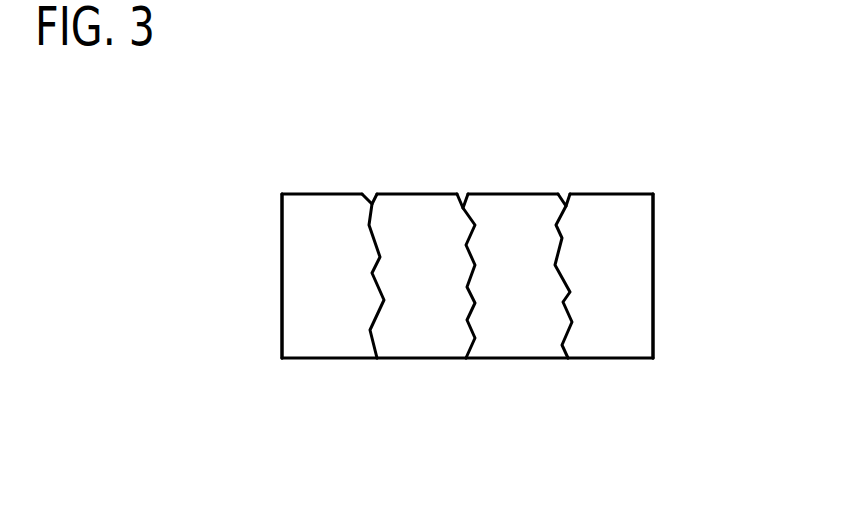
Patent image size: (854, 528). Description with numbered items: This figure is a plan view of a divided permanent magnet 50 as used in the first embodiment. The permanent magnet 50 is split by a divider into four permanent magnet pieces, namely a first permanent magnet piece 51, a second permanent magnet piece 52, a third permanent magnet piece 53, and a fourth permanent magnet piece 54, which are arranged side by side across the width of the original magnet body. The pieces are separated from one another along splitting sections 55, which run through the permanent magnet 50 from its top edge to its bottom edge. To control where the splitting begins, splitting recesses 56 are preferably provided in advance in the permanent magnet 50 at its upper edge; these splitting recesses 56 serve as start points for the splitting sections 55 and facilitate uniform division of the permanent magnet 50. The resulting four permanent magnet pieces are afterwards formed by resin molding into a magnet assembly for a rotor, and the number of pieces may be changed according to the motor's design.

The permanent magnet 50 is at (662, 213).
The first permanent magnet piece 51 is at (308, 218).
The second permanent magnet piece 52 is at (423, 218).
The third permanent magnet piece 53 is at (522, 218).
The fourth permanent magnet piece 54 is at (615, 218).
The splitting section 55 is at (375, 365).
The splitting recess 56 is at (370, 195).